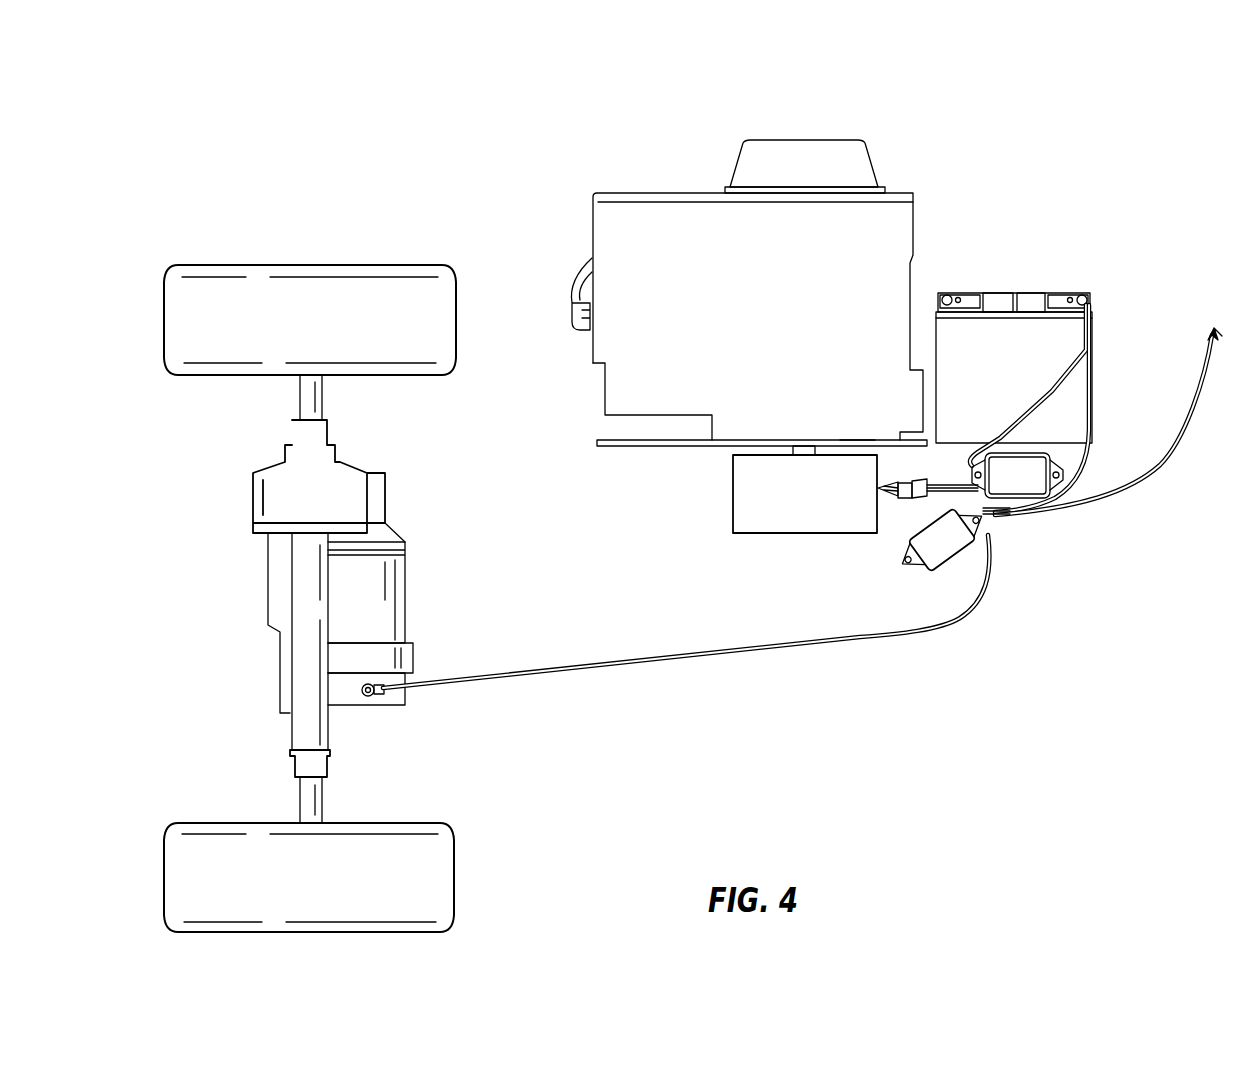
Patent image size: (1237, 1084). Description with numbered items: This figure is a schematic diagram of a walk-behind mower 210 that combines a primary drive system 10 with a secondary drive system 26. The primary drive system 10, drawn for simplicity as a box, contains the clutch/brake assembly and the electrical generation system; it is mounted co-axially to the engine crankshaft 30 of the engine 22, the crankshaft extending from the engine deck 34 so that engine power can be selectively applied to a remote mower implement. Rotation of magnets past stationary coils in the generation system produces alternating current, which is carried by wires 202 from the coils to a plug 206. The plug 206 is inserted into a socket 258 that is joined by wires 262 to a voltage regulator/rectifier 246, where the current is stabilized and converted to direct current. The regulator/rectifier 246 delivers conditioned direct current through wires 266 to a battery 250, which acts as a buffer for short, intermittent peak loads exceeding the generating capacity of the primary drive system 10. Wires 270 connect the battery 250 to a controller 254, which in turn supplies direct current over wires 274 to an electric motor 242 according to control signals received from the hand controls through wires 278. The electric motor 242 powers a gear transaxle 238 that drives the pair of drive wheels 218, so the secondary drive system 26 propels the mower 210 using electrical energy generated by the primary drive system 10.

The drive system 10 is at (750, 482).
The engine 22 is at (663, 223).
The secondary drive system 26 is at (1016, 577).
The engine crankshaft 30 is at (807, 440).
The engine deck 34 is at (642, 446).
The wires 202 is at (857, 440).
The plug 206 is at (900, 483).
The walk-behind mower 210 is at (1029, 799).
The drive wheels 218 is at (353, 287).
The gear transaxle 238 is at (302, 595).
The electric motor 242 is at (383, 610).
The voltage regulator/rectifier 246 is at (1028, 467).
The battery 250 is at (1033, 340).
The controller 254 is at (905, 540).
The socket 258 is at (918, 480).
The wires 262 is at (1000, 517).
The wires 266 is at (1052, 397).
The wires 270 is at (1082, 460).
The wires 274 is at (885, 633).
The wires 278 is at (1143, 483).